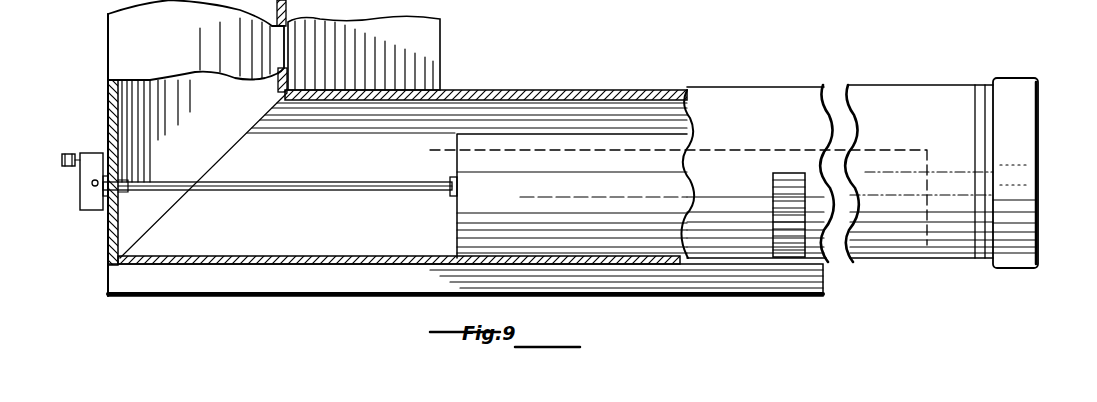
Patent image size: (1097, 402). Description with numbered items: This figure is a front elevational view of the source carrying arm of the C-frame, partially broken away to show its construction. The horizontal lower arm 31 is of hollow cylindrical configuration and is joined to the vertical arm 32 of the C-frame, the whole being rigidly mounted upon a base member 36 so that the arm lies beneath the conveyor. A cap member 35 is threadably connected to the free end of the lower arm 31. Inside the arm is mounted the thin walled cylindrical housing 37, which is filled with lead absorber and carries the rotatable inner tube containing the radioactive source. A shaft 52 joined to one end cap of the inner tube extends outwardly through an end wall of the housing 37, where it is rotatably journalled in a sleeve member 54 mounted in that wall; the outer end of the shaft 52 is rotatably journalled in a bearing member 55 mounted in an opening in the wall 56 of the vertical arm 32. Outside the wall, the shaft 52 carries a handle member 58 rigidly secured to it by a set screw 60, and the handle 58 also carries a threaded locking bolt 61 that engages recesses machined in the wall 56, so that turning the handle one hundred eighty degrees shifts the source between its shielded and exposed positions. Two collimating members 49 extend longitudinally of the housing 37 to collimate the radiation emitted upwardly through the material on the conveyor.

The horizontal lower arm 31 is at (545, 90).
The vertical arm 32 is at (108, 33).
The cap member 35 is at (1018, 143).
The base member 36 is at (340, 275).
The cylindrical housing 37 is at (665, 190).
The collimating members 49 is at (675, 150).
The shaft 52 is at (312, 182).
The sleeve member 54 is at (452, 178).
The bearing member 55 is at (128, 191).
The wall 56 is at (108, 119).
The handle member 58 is at (80, 204).
The set screw 60 is at (91, 184).
The locking bolt 61 is at (62, 160).